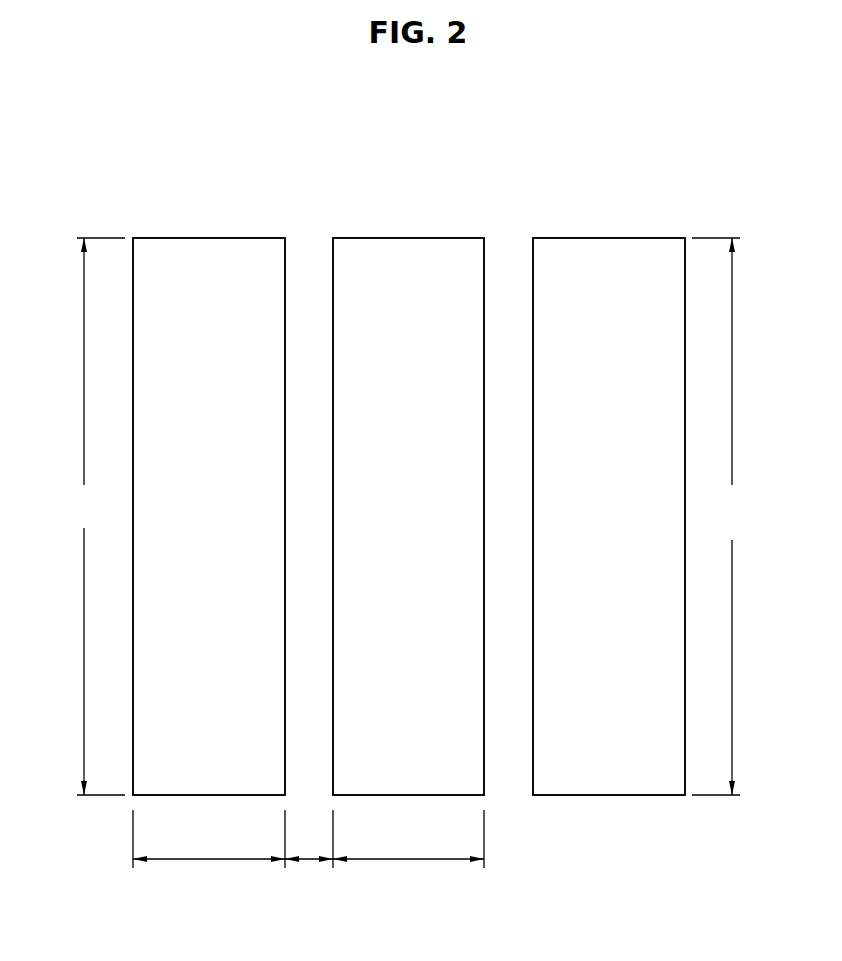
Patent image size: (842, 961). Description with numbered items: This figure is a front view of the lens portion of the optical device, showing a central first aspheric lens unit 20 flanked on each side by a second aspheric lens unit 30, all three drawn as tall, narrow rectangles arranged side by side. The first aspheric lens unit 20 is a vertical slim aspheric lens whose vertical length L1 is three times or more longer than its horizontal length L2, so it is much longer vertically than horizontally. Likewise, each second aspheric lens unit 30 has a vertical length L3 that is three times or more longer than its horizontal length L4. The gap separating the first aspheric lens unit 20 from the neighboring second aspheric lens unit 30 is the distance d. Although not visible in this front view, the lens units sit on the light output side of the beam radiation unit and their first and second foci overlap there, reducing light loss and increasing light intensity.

The first aspheric lens unit 20 is at (421, 216).
The second aspheric lens unit 30 is at (245, 213).
The vertical length of the first aspheric lens unit L1 is at (719, 516).
The horizontal length of the first aspheric lens unit L2 is at (408, 839).
The vertical length of the second aspheric lens unit L3 is at (99, 516).
The horizontal length of the second aspheric lens unit L4 is at (209, 839).
The distance between the first aspheric lens unit and the second aspheric lens unit d is at (310, 862).